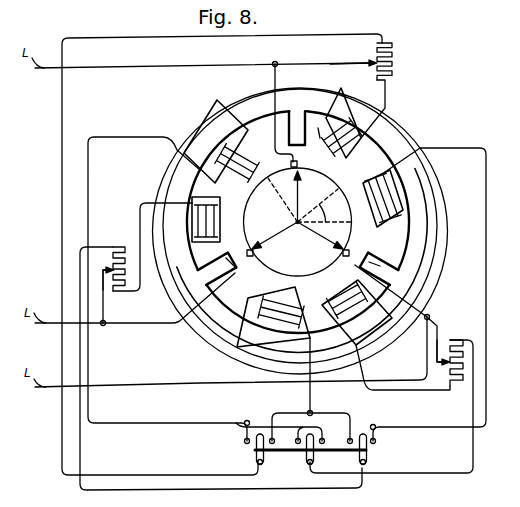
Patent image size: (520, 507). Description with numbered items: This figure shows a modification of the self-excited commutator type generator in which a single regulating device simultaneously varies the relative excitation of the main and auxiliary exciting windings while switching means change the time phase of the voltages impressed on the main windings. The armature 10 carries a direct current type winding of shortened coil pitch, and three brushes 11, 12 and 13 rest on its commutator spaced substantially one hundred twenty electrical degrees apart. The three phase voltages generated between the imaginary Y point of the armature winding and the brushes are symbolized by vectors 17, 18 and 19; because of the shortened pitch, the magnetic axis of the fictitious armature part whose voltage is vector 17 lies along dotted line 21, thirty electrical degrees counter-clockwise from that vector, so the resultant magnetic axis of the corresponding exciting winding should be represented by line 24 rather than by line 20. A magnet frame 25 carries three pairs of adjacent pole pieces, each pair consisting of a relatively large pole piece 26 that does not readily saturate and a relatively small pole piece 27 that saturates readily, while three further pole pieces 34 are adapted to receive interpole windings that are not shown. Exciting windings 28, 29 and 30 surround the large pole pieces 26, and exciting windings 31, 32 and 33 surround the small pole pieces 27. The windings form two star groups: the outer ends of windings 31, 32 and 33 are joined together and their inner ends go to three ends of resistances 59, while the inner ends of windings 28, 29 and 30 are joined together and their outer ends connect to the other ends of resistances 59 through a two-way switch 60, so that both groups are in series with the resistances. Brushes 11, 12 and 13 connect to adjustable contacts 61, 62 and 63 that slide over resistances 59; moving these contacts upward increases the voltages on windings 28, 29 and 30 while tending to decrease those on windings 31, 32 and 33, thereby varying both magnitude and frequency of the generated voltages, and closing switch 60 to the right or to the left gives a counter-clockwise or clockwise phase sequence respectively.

The rotor 10 is at (249, 204).
The brush 11 is at (298, 166).
The brush 12 is at (350, 251).
The brush 13 is at (247, 253).
The voltage vector 17 is at (299, 205).
The voltage vector 18 is at (288, 241).
The voltage vector 19 is at (327, 242).
The line 20 is at (325, 213).
The dotted line 21 is at (282, 196).
The line 24 is at (317, 211).
The magnet frame 25 is at (234, 105).
The large pole piece 26 is at (244, 173).
The small pole piece 27 is at (221, 222).
The exciting winding 28 is at (386, 193).
The exciting winding 29 is at (279, 324).
The exciting winding 30 is at (225, 162).
The exciting winding 31 is at (349, 131).
The exciting winding 32 is at (355, 316).
The exciting winding 33 is at (196, 225).
The pole piece 34 is at (326, 139).
The resistances 59 is at (392, 47).
The two-way switch 60 is at (367, 450).
The adjustable contact 61 is at (352, 66).
The adjustable contact 62 is at (426, 360).
The adjustable contact 63 is at (107, 270).